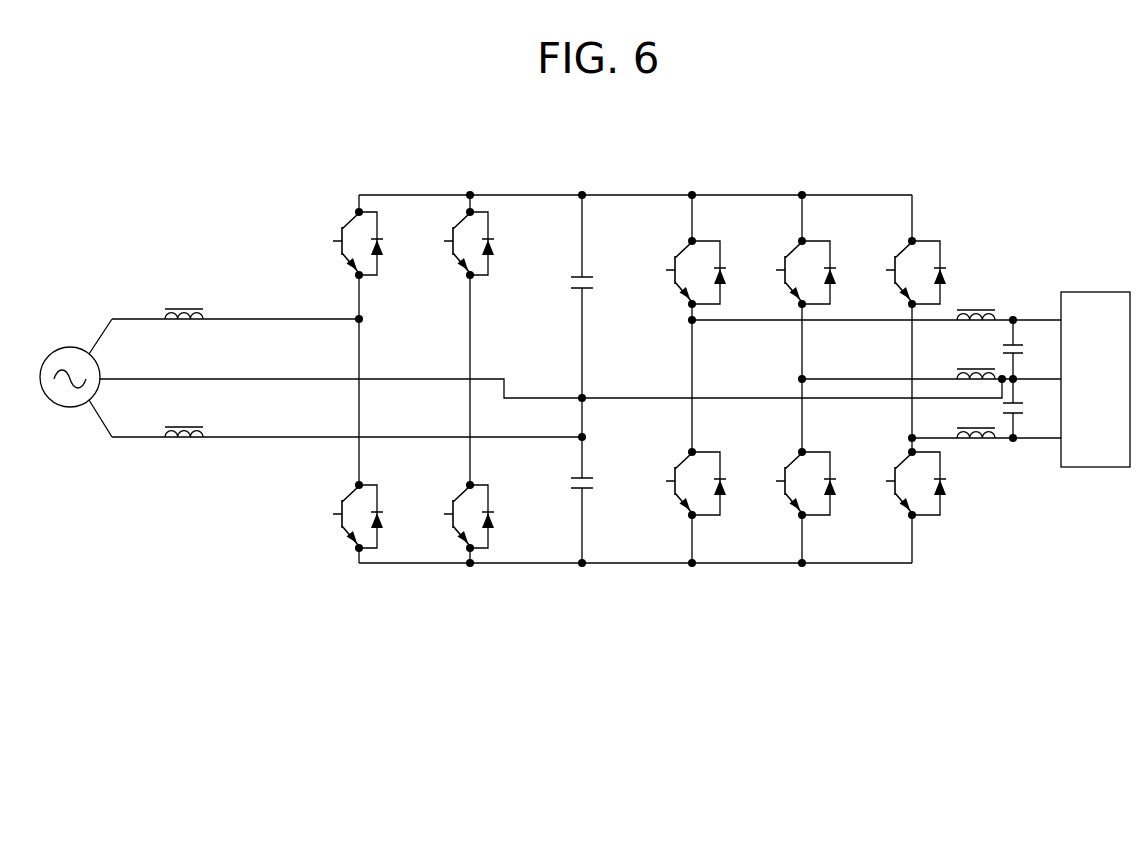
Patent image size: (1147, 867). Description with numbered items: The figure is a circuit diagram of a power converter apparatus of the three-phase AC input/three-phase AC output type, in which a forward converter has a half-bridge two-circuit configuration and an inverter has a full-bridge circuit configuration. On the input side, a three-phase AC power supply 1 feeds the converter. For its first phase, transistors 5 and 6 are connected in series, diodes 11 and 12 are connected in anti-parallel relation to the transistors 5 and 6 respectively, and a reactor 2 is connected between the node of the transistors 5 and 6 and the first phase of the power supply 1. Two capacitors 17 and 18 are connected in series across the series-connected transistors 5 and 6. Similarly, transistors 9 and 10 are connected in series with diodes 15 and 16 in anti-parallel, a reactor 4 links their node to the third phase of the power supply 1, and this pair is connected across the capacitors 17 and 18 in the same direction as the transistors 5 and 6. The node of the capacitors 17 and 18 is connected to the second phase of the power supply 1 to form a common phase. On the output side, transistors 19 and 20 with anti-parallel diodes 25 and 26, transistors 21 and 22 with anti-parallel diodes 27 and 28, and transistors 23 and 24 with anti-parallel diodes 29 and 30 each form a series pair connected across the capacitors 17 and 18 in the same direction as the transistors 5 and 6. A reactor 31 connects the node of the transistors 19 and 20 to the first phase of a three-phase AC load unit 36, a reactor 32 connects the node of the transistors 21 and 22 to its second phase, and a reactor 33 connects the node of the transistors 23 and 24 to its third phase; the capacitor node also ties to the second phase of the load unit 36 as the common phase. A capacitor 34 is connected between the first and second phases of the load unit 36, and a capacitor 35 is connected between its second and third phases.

The three-phase AC power supply 1 is at (72, 408).
The reactor 2 is at (179, 306).
The reactor 4 is at (179, 453).
The transistor 5 is at (346, 224).
The transistor 6 is at (346, 497).
The transistor 9 is at (457, 224).
The transistor 10 is at (457, 497).
The diode 11 is at (386, 256).
The diode 12 is at (386, 526).
The diode 15 is at (497, 256).
The diode 16 is at (497, 526).
The capacitor 17 is at (594, 285).
The capacitor 18 is at (594, 486).
The transistor 19 is at (685, 251).
The transistor 20 is at (685, 463).
The transistor 21 is at (795, 251).
The transistor 22 is at (795, 463).
The transistor 23 is at (905, 251).
The transistor 24 is at (905, 463).
The diode 25 is at (729, 275).
The diode 26 is at (729, 486).
The diode 27 is at (839, 275).
The diode 28 is at (839, 486).
The diode 29 is at (947, 265).
The diode 30 is at (949, 486).
The reactor 31 is at (999, 291).
The reactor 32 is at (972, 371).
The reactor 33 is at (970, 447).
The capacitor 34 is at (1015, 330).
The capacitor 35 is at (1015, 430).
The three-phase AC load unit 36 is at (1095, 468).